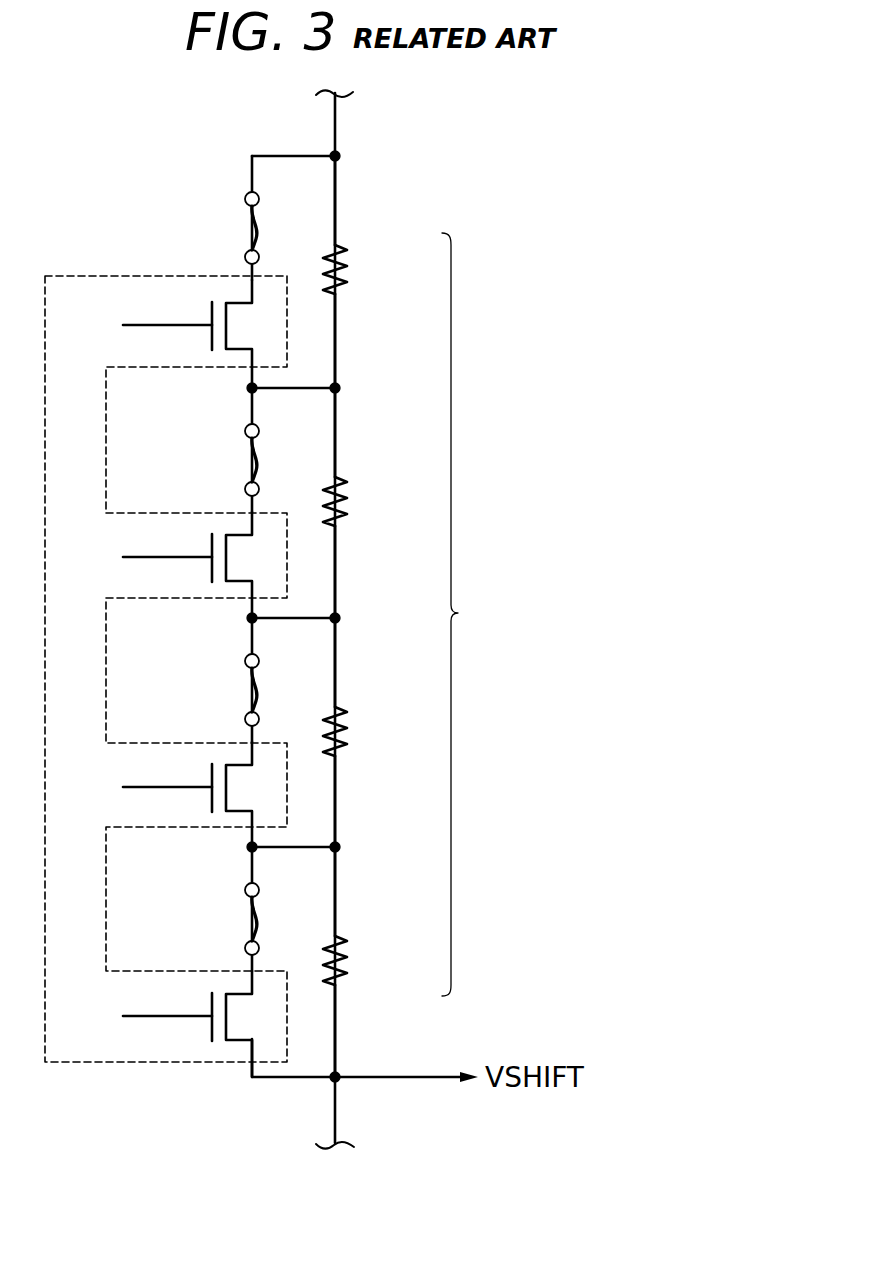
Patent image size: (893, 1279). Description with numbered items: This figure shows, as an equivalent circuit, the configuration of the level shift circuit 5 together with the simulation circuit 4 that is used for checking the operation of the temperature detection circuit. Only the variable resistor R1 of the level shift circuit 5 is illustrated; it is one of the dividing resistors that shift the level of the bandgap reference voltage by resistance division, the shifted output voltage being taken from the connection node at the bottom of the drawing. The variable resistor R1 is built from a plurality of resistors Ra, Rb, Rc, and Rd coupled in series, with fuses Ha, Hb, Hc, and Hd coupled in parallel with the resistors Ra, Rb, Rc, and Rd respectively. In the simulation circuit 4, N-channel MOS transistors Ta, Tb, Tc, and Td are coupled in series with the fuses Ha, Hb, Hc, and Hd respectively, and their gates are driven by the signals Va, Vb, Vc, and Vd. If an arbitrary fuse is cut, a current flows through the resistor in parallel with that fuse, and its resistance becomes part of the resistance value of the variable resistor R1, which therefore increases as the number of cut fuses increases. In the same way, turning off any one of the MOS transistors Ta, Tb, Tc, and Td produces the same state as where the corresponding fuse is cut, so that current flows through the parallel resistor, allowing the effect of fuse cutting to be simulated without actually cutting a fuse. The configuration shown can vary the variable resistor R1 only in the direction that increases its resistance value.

The simulation circuit 4 is at (98, 276).
The level shift circuit 5 is at (380, 208).
The fuse Ha is at (247, 221).
The fuse Hb is at (247, 453).
The fuse Hc is at (247, 683).
The fuse Hd is at (247, 912).
The N-channel MOS transistor Ta is at (209, 315).
The N-channel MOS transistor Tb is at (209, 547).
The N-channel MOS transistor Tc is at (209, 777).
The N-channel MOS transistor Td is at (209, 1006).
The resistor Ra is at (347, 274).
The resistor Rb is at (347, 506).
The resistor Rc is at (347, 736).
The resistor Rd is at (347, 965).
The variable resistor R1 is at (472, 614).
The control voltage Va is at (150, 325).
The control voltage Vb is at (150, 557).
The control voltage Vc is at (150, 787).
The control voltage Vd is at (150, 1016).